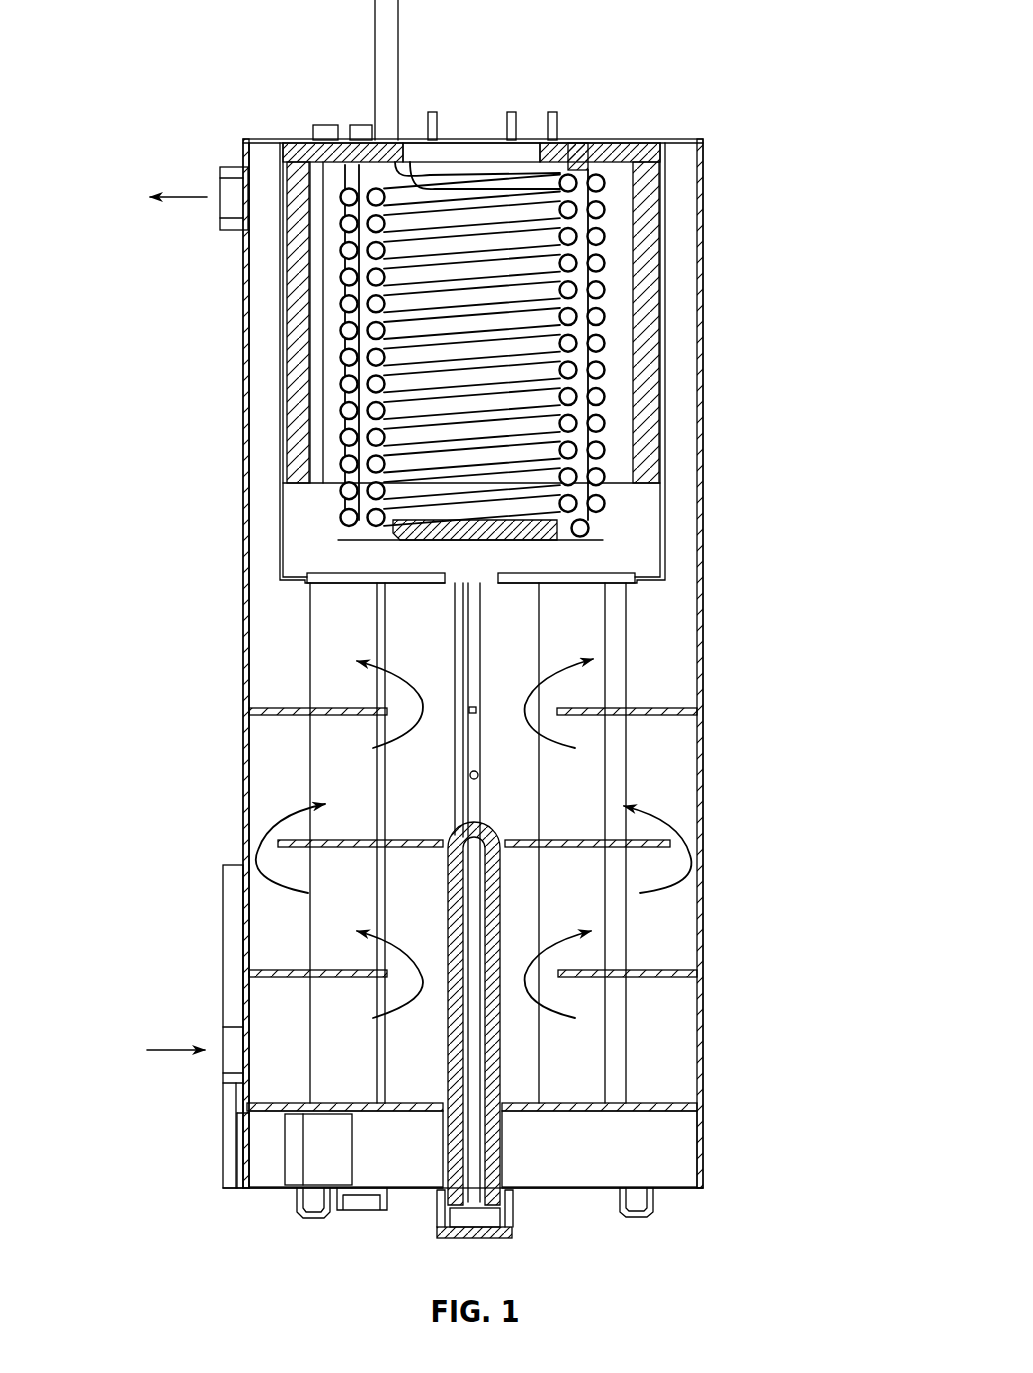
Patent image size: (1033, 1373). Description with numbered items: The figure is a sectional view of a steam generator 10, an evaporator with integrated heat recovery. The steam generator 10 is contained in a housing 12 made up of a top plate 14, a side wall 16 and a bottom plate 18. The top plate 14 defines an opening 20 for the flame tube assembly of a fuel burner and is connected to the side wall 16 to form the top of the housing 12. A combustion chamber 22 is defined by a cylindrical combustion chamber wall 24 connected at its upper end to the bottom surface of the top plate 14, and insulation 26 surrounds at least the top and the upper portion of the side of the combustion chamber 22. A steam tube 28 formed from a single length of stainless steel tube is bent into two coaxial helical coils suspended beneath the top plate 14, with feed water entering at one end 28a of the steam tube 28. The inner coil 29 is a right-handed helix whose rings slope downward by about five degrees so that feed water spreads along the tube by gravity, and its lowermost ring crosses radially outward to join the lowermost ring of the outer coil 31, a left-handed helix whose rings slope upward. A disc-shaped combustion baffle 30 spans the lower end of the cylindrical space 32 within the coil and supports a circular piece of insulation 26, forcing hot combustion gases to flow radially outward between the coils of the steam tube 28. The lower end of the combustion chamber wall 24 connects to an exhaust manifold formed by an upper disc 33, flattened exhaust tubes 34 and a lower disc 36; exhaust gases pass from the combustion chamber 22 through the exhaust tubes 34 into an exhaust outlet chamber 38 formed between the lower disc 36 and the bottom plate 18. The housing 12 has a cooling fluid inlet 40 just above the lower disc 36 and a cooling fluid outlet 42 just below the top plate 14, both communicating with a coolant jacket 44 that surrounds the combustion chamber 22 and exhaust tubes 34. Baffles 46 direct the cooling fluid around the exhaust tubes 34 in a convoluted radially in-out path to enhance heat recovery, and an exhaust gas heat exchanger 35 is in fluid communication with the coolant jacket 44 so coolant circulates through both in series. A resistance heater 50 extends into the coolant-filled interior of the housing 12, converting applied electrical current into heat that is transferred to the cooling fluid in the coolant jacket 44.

The steam generator 10 is at (812, 248).
The housing 12 is at (707, 650).
The top plate 14 is at (272, 142).
The side wall 16 is at (705, 405).
The bottom plate 18 is at (675, 1188).
The opening 20 is at (483, 150).
The combustion chamber 22 is at (300, 507).
The combustion chamber wall 24 is at (282, 495).
The insulation 26 is at (622, 150).
The steam tube 28 is at (602, 340).
The end of steam tube 28a is at (388, 57).
The inner coil 29 is at (569, 210).
The combustion baffle 30 is at (598, 540).
The outer coil 31 is at (349, 250).
The cylindrical space 32 is at (548, 318).
The upper disc 33 is at (300, 582).
The exhaust tubes 34 is at (318, 657).
The exhaust gas heat exchanger 35 is at (652, 690).
The lower disc 36 is at (670, 1102).
The exhaust outlet chamber 38 is at (668, 1148).
The cooling fluid inlet 40 is at (218, 1040).
The cooling fluid outlet 42 is at (222, 182).
The coolant jacket 44 is at (680, 470).
The baffles 46 is at (280, 715).
The resistance heater 50 is at (497, 1063).